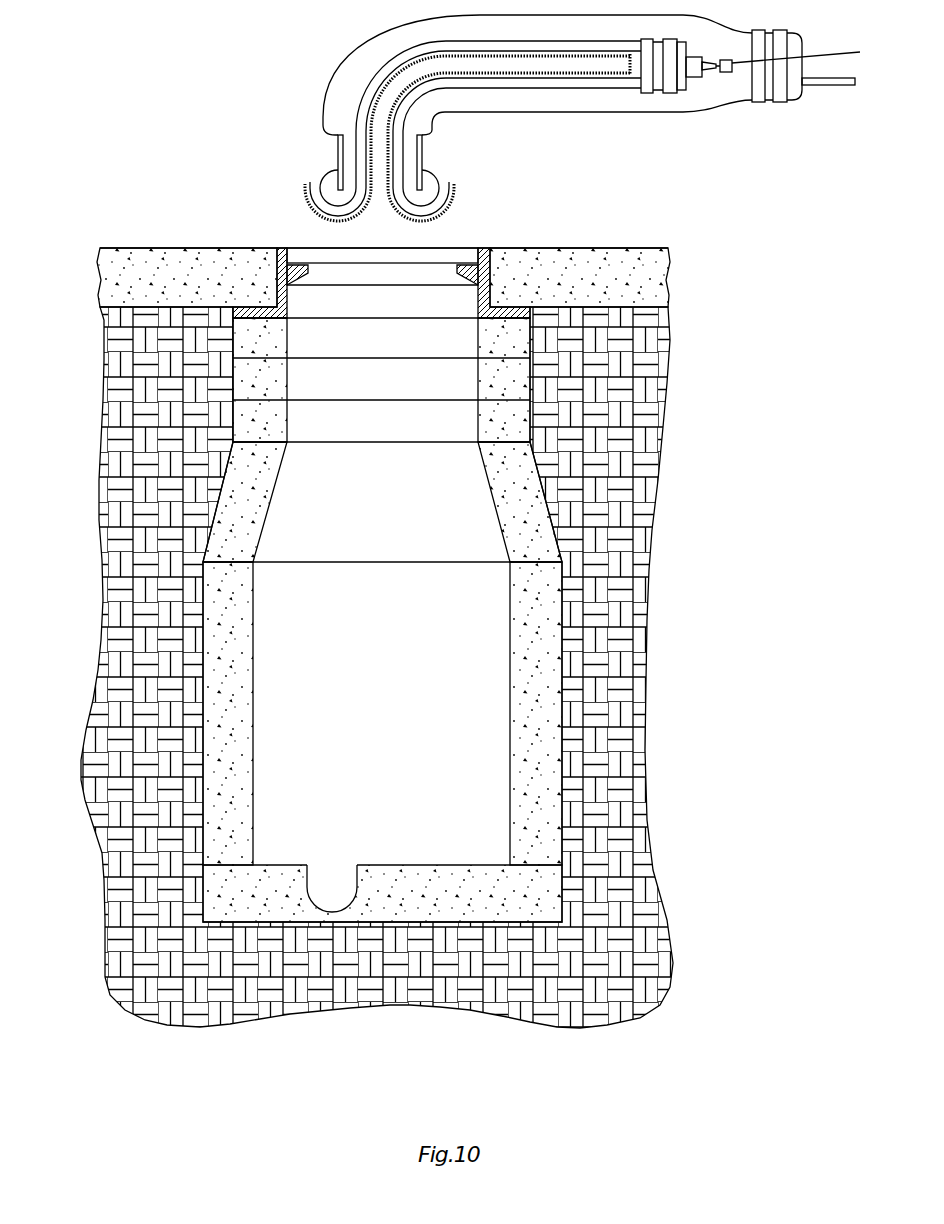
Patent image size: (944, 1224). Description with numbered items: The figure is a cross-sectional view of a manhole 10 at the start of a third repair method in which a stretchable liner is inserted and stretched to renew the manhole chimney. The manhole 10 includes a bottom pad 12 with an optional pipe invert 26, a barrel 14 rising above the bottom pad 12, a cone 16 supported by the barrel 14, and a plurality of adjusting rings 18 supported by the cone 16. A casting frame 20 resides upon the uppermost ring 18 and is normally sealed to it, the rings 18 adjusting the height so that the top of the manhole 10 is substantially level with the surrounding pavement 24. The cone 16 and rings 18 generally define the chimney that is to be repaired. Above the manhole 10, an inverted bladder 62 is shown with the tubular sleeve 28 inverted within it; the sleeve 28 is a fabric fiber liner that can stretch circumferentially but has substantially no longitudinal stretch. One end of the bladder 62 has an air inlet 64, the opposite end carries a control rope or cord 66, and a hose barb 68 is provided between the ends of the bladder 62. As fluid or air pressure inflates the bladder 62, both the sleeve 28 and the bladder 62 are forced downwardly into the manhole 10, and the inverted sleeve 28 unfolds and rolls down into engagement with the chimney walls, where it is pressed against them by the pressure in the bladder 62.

The manhole 10 is at (291, 223).
The bottom pad 12 is at (468, 868).
The barrel 14 is at (246, 742).
The cone 16 is at (256, 528).
The adjusting rings 18 is at (278, 342).
The casting frame 20 is at (277, 250).
The pavement 24 is at (183, 258).
The pipe invert 26 is at (328, 880).
The tubular sleeve 28 is at (436, 217).
The inverted bladder 62 is at (340, 88).
The air inlet 64 is at (822, 88).
The control rope or cord 66 is at (828, 50).
The hose barb 68 is at (338, 160).